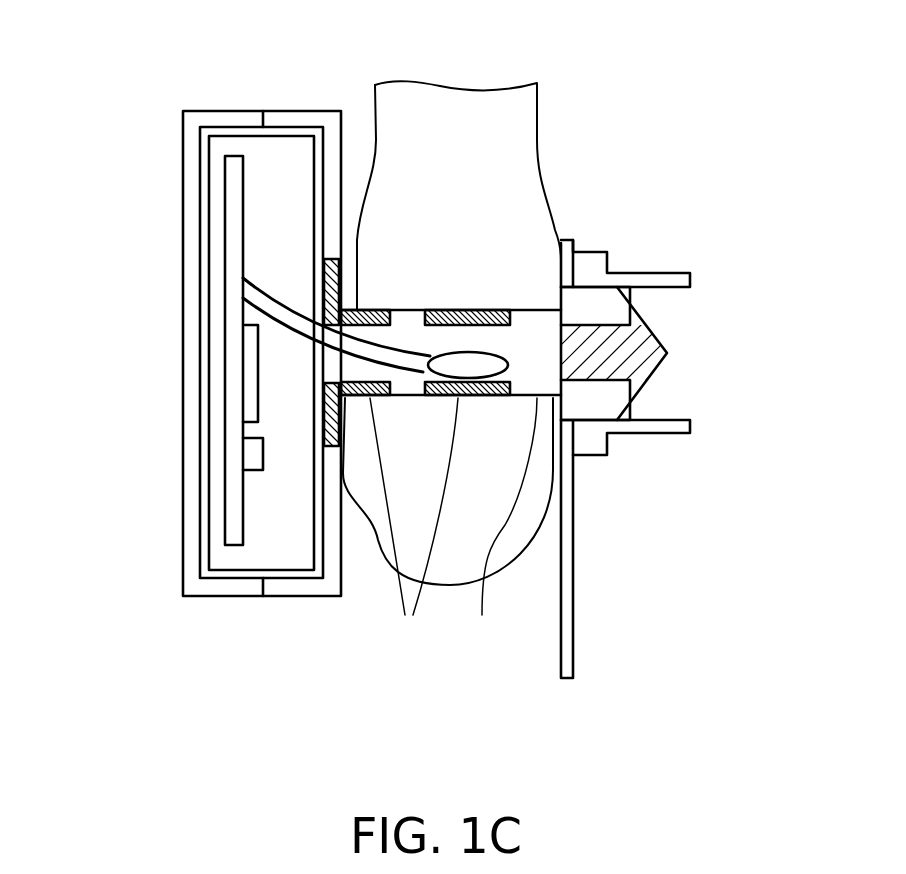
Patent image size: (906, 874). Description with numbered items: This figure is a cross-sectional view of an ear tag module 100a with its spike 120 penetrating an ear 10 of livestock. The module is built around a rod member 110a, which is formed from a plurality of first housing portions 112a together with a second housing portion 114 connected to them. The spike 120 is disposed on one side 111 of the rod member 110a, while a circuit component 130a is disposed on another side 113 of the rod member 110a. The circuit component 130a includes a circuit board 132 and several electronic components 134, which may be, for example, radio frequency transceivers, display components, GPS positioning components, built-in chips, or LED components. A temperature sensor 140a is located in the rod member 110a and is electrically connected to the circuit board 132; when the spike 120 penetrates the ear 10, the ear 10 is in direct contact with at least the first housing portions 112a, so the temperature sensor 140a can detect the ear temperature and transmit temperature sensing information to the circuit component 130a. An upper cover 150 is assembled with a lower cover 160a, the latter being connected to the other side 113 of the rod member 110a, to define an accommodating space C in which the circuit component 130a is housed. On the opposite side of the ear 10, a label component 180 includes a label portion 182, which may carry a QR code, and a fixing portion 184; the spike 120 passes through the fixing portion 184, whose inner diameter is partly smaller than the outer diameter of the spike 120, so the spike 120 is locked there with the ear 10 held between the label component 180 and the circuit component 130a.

The ear 10 is at (457, 108).
The ear tag module 100a is at (677, 703).
The rod member 110a is at (451, 504).
The one side of the rod member 111 is at (638, 311).
The first housing portion 112a is at (448, 523).
The another side of the rod member 113 is at (332, 364).
The second housing portion 114 is at (498, 523).
The spike 120 is at (642, 340).
The circuit component 130a is at (143, 350).
The circuit board 132 is at (233, 370).
The electronic component 134 is at (250, 397).
The temperature sensor 140a is at (468, 362).
The upper cover 150 is at (221, 596).
The lower cover 160a is at (317, 596).
The label component 180 is at (679, 459).
The label portion 182 is at (568, 562).
The fixing portion 184 is at (657, 428).
The accommodating space C is at (287, 126).